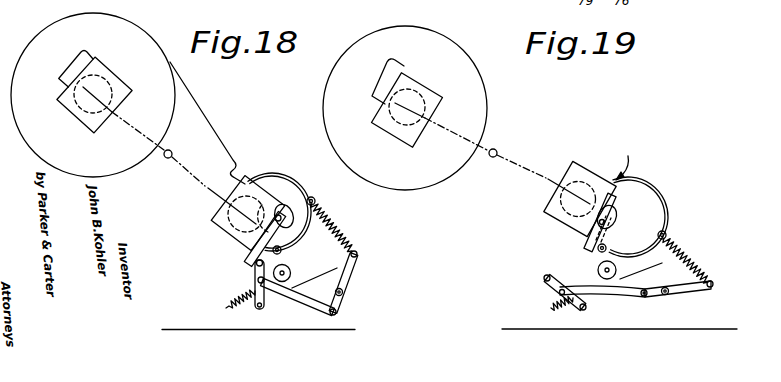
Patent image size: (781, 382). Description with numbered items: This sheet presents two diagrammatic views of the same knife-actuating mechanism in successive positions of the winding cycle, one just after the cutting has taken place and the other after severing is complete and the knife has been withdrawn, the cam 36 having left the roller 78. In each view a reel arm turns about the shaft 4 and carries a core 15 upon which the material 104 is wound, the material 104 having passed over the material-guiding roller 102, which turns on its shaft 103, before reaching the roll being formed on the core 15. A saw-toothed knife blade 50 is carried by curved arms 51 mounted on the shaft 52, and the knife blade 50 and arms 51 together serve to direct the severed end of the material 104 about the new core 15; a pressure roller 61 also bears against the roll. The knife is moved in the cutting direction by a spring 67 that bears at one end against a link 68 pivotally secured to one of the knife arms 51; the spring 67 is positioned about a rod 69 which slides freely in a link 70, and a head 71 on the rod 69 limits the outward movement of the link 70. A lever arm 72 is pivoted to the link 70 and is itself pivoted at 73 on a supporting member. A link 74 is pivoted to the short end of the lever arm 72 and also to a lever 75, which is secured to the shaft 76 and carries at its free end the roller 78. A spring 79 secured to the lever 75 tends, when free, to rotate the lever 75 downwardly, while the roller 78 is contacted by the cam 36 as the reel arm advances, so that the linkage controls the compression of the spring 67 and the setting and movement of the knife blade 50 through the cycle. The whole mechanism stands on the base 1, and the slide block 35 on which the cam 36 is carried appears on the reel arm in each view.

In FIG. 18, the base 1 is at (164, 328).
In FIG. 19, the base 1 is at (736, 327).
In FIG. 18, the shaft 4 is at (169, 151).
In FIG. 19, the shaft 4 is at (494, 149).
In FIG. 18, the core 15 is at (107, 83).
In FIG. 19, the core 15 is at (397, 125).
In FIG. 18, the slide block 35 is at (103, 70).
In FIG. 19, the slide block 35 is at (423, 90).
In FIG. 18, the cam 36 is at (83, 55).
In FIG. 19, the cam 36 is at (400, 63).
In FIG. 18, the knife blade 50 is at (244, 181).
In FIG. 19, the knife blade 50 is at (626, 160).
In FIG. 18, the curved arms 51 is at (270, 173).
In FIG. 19, the curved arms 51 is at (650, 179).
In FIG. 18, the shaft 52 is at (280, 247).
In FIG. 19, the shaft 52 is at (607, 247).
In FIG. 18, the pressure roller 61 is at (289, 209).
In FIG. 19, the pressure roller 61 is at (618, 216).
In FIG. 18, the spring 67 is at (342, 230).
In FIG. 19, the spring 67 is at (676, 249).
In FIG. 18, the link 68 is at (313, 198).
In FIG. 19, the link 68 is at (667, 232).
In FIG. 18, the rod 69 is at (332, 219).
In FIG. 19, the rod 69 is at (690, 264).
In FIG. 18, the link 70 is at (358, 252).
In FIG. 19, the link 70 is at (696, 282).
In FIG. 18, the head 71 is at (358, 257).
In FIG. 19, the head 71 is at (714, 287).
In FIG. 18, the lever arm 72 is at (341, 303).
In FIG. 19, the lever arm 72 is at (694, 290).
In FIG. 18, the pivot 73 is at (343, 293).
In FIG. 19, the pivot 73 is at (665, 296).
In FIG. 18, the link 74 is at (292, 300).
In FIG. 19, the link 74 is at (608, 297).
In FIG. 18, the lever 75 is at (258, 279).
In FIG. 19, the lever 75 is at (554, 289).
In FIG. 18, the shaft 76 is at (259, 308).
In FIG. 19, the shaft 76 is at (581, 312).
In FIG. 18, the roller 78 is at (252, 263).
In FIG. 19, the roller 78 is at (544, 278).
In FIG. 18, the spring 79 is at (228, 307).
In FIG. 19, the spring 79 is at (548, 307).
In FIG. 18, the material-guiding roller 102 is at (288, 268).
In FIG. 19, the material-guiding roller 102 is at (598, 268).
In FIG. 18, the shaft 103 is at (286, 272).
In FIG. 19, the shaft 103 is at (600, 272).
In FIG. 18, the material 104 is at (210, 125).
In FIG. 19, the material 104 is at (632, 277).